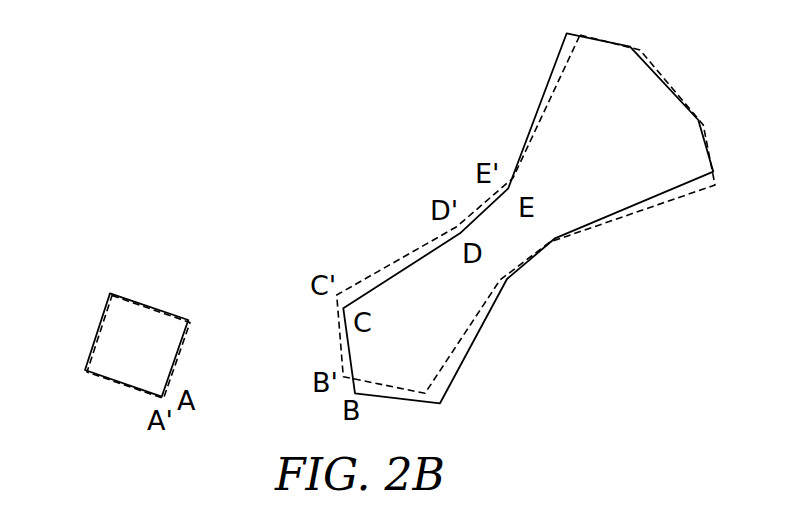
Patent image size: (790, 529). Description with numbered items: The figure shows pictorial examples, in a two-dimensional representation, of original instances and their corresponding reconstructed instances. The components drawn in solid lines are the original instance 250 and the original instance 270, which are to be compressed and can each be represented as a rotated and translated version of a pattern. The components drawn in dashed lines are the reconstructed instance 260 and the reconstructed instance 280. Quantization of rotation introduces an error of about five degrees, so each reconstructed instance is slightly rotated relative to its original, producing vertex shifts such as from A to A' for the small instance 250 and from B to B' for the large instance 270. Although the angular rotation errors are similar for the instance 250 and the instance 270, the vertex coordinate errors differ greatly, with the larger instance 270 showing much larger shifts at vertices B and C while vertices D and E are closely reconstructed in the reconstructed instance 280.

The original instance 250 is at (110, 293).
The reconstructed instance 260 is at (188, 320).
The original instance 270 is at (687, 188).
The reconstructed instance 280 is at (628, 217).